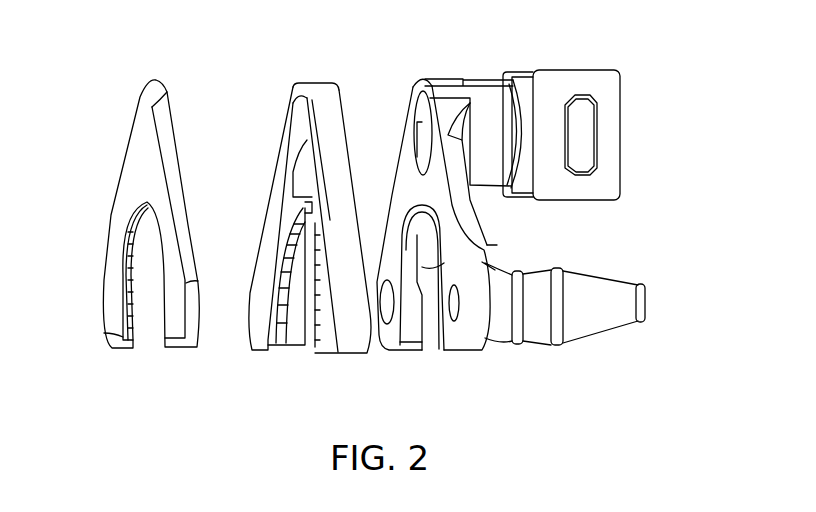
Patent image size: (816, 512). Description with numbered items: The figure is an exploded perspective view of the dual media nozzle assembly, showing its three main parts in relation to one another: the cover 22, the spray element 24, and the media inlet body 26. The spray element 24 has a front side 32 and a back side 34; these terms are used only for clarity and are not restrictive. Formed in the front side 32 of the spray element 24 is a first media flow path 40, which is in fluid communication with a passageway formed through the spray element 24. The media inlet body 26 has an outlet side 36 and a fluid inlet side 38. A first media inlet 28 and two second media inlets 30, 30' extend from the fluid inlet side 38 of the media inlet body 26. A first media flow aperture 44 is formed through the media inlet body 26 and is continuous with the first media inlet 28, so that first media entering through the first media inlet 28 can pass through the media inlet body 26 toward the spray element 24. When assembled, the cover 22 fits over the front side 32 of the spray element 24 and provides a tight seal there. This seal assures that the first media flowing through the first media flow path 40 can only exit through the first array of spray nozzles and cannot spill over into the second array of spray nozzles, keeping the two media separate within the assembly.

The cover 22 is at (108, 323).
The spray element 24 is at (299, 214).
The media inlet body 26 is at (483, 222).
The first media inlet 28 is at (592, 73).
The second media inlet 30 is at (422, 318).
The second media inlet 30' is at (600, 316).
The front side 32 is at (275, 197).
The back side 34 is at (342, 128).
The outlet side 36 is at (428, 182).
The fluid inlet side 38 is at (488, 250).
The first media flow path 40 is at (297, 117).
The first media flow aperture 44 is at (423, 108).